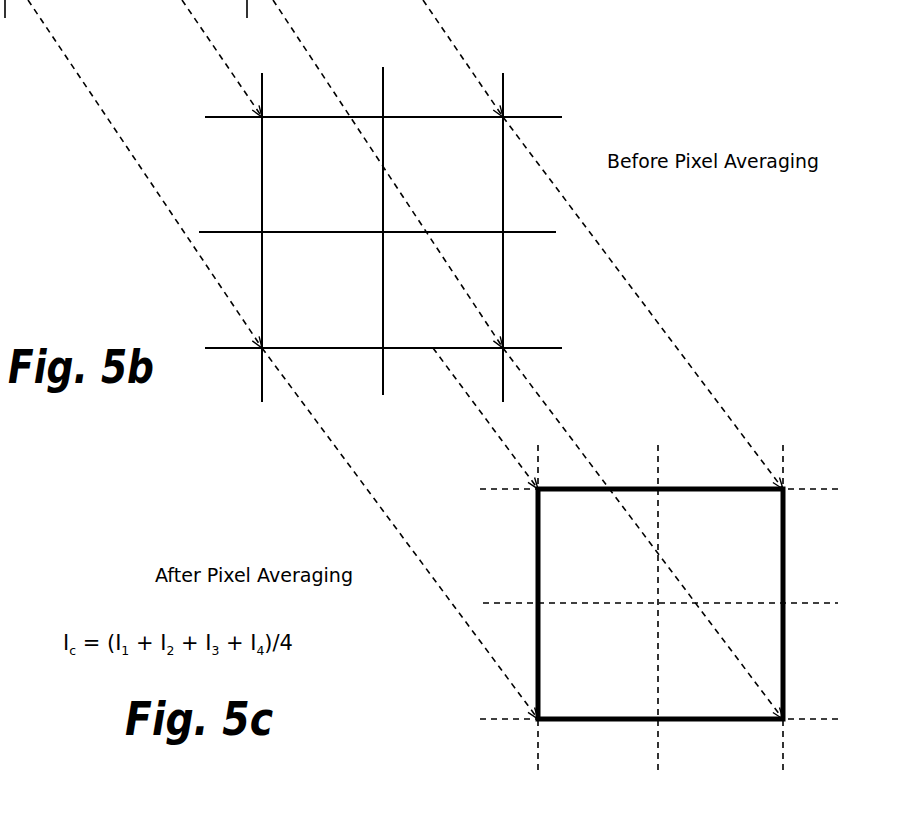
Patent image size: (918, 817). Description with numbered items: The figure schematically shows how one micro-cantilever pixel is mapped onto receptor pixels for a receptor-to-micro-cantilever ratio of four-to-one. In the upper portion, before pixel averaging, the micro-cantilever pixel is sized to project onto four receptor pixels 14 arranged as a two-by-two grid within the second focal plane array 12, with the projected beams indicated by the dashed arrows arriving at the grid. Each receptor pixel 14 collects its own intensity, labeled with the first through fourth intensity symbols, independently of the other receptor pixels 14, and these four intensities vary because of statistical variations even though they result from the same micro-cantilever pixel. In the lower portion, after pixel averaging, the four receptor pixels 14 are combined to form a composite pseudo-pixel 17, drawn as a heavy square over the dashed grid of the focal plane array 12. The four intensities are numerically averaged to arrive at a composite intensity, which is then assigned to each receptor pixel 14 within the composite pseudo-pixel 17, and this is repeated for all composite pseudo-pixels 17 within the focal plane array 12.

In FIG. 5B, the second focal plane array 12 is at (537, 85).
In FIG. 5C, the second focal plane array 12 is at (493, 588).
In FIG. 5B, the receptor pixel 14 is at (293, 163).
In FIG. 5C, the receptor pixel 14 is at (567, 567).
In FIG. 5C, the composite pseudo-pixel 17 is at (655, 487).